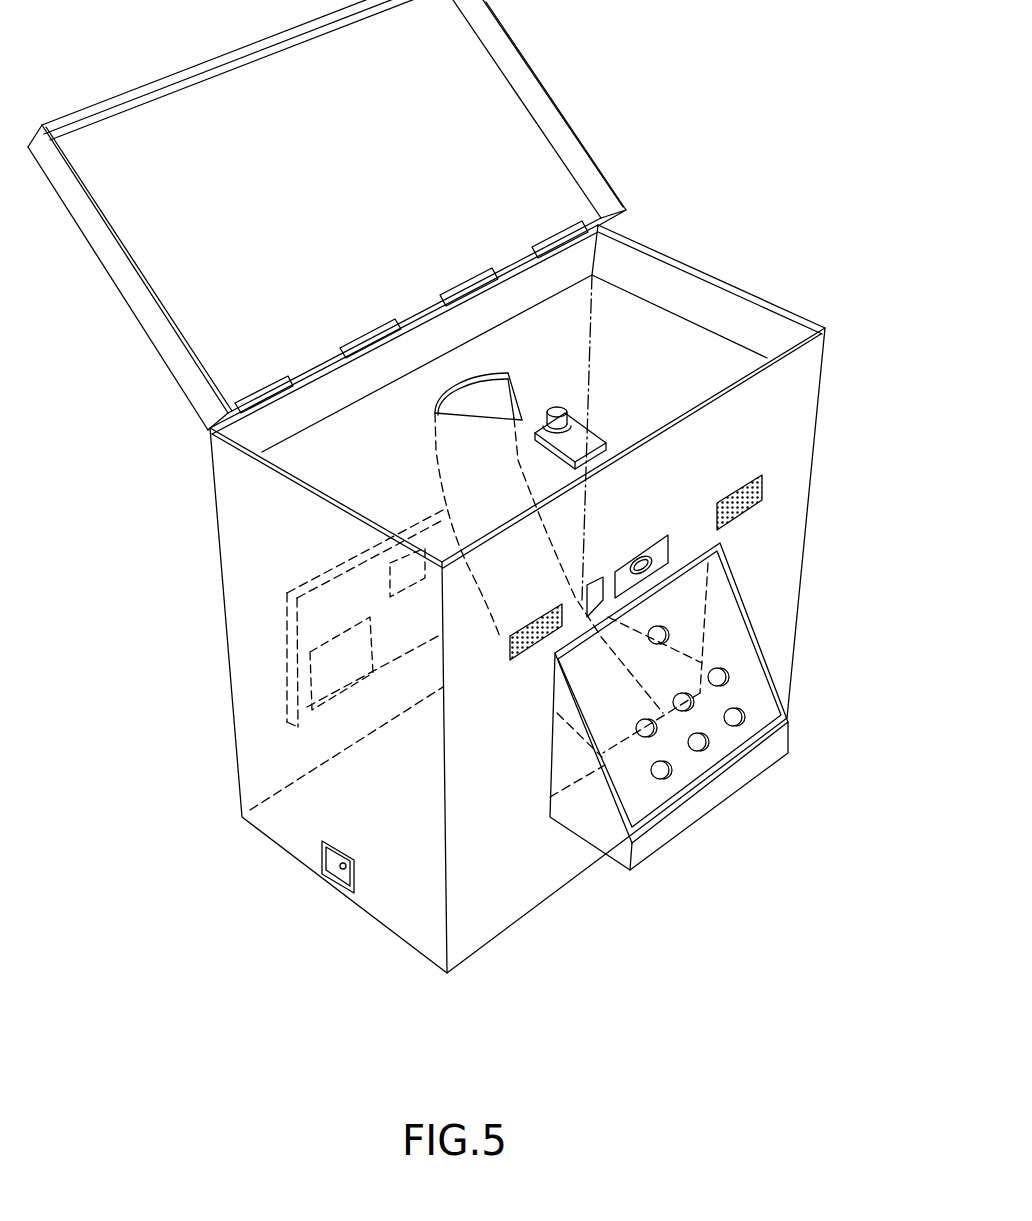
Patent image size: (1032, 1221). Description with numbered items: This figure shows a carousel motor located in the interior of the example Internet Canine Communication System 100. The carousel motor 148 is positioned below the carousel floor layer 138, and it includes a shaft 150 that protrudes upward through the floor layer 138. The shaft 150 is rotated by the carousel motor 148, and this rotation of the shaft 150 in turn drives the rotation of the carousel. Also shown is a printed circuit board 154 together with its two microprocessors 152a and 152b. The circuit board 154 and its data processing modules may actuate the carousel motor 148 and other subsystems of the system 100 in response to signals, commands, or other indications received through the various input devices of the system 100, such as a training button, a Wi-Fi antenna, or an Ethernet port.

The Internet Canine Communication System 100 is at (756, 128).
The carousel floor layer 138 is at (668, 333).
The carousel motor 148 is at (580, 444).
The shaft 150 is at (566, 413).
The microprocessor 152a is at (392, 582).
The microprocessor 152b is at (334, 667).
The printed circuit board 154 is at (326, 610).